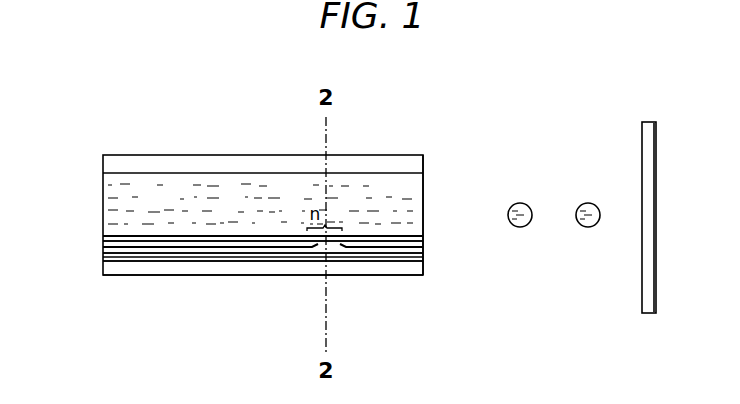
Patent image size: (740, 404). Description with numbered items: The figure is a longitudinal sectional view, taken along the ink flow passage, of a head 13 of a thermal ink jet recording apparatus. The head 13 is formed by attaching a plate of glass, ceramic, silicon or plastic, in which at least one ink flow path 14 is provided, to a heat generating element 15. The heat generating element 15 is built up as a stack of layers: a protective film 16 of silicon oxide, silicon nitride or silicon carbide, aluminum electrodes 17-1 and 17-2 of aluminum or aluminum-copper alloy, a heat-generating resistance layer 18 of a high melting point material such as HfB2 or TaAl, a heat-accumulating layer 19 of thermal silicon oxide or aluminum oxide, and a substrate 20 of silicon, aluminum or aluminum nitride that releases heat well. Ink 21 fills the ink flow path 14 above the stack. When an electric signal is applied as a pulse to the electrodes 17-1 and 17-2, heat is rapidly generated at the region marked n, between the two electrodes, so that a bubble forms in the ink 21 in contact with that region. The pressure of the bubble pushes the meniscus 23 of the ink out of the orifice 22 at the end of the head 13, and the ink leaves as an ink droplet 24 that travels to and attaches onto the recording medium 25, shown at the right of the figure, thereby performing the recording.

The head 13 is at (190, 154).
The ink flow path 14 is at (267, 172).
The heat generating element 15 is at (85, 238).
The protective film 16 is at (133, 243).
The aluminum electrode 17-1 is at (173, 250).
The aluminum electrode 17-2 is at (403, 250).
The heat-generating resistance layer 18 is at (223, 255).
The heat-accumulating layer 19 is at (258, 262).
The substrate 20 is at (358, 278).
The ink 21 is at (126, 178).
The orifice 22 is at (430, 233).
The meniscus 23 is at (425, 210).
The ink droplet 24 is at (503, 190).
The recording medium 25 is at (638, 150).